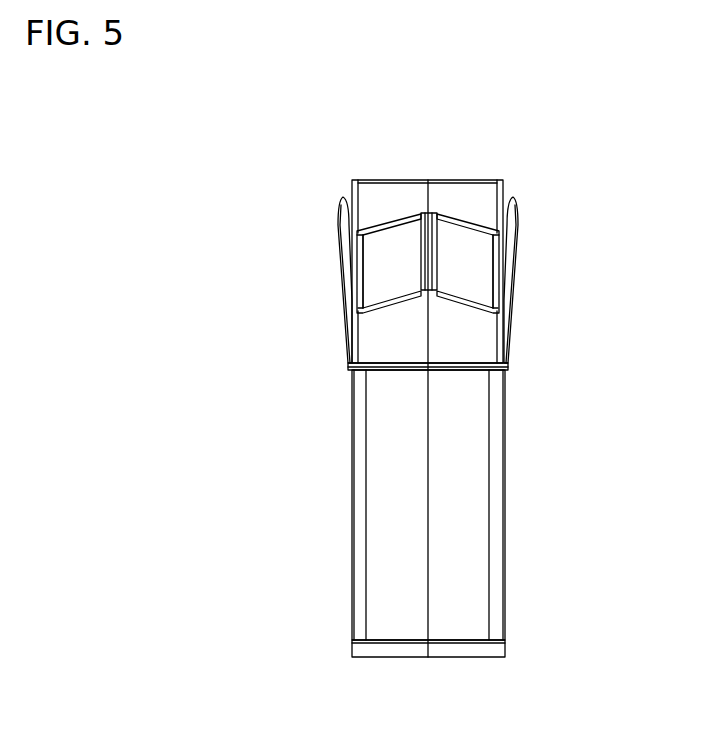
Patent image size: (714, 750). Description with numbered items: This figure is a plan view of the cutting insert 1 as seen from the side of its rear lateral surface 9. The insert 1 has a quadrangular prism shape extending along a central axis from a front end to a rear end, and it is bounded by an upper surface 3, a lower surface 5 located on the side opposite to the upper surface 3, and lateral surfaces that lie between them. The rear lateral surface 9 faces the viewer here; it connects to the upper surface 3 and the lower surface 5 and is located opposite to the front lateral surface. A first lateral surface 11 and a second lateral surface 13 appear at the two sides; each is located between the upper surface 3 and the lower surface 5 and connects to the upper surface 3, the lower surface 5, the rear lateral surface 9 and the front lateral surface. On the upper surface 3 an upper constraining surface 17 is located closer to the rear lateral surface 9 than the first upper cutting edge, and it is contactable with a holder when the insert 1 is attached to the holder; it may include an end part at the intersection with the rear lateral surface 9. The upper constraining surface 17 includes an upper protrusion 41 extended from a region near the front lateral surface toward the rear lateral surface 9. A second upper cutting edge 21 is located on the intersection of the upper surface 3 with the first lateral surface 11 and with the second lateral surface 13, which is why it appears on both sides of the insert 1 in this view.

The insert 1 is at (403, 110).
The upper surface 3 is at (468, 200).
The lower surface 5 is at (393, 657).
The rear lateral surface 9 is at (467, 537).
The first lateral surface 11 is at (506, 435).
The second lateral surface 13 is at (350, 433).
The upper constraining surface 17 is at (385, 277).
The upper protrusion 41 is at (425, 265).
The second upper cutting edge 21 is at (345, 208).